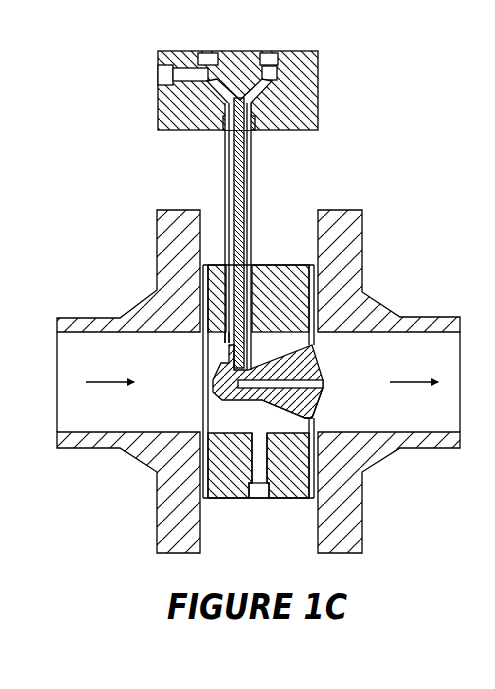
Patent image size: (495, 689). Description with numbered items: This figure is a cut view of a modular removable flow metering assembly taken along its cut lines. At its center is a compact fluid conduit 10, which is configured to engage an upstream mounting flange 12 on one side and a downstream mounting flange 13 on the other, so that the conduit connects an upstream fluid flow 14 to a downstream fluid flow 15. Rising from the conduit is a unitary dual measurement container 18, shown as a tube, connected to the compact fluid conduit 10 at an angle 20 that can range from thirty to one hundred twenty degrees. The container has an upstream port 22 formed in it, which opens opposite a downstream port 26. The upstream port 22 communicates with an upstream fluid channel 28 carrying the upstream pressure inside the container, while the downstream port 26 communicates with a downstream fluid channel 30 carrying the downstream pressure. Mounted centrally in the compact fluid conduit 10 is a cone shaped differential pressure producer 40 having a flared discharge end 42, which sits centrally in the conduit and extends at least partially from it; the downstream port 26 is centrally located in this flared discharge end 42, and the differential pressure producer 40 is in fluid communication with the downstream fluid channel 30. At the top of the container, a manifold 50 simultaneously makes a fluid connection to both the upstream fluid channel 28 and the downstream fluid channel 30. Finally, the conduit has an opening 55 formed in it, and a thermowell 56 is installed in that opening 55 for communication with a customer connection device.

The compact fluid conduit 10 is at (285, 499).
The upstream mounting flange 12 is at (172, 210).
The downstream mounting flange 13 is at (343, 210).
The upstream fluid flow 14 is at (104, 382).
The downstream fluid flow 15 is at (412, 382).
The unitary dual measurement container 18 is at (252, 193).
The angle 20 is at (297, 263).
The upstream port 22 is at (223, 338).
The downstream port 26 is at (328, 381).
The upstream fluid channel 28 is at (226, 163).
The downstream fluid channel 30 is at (251, 163).
The cone shaped differential pressure producer 40 is at (296, 351).
The flared discharge end 42 is at (324, 393).
The manifold 50 is at (318, 80).
The opening 55 is at (258, 499).
The thermowell 56 is at (264, 442).